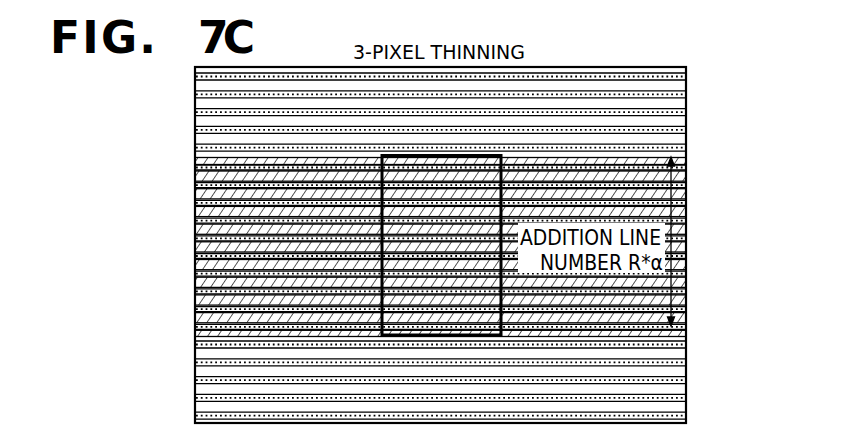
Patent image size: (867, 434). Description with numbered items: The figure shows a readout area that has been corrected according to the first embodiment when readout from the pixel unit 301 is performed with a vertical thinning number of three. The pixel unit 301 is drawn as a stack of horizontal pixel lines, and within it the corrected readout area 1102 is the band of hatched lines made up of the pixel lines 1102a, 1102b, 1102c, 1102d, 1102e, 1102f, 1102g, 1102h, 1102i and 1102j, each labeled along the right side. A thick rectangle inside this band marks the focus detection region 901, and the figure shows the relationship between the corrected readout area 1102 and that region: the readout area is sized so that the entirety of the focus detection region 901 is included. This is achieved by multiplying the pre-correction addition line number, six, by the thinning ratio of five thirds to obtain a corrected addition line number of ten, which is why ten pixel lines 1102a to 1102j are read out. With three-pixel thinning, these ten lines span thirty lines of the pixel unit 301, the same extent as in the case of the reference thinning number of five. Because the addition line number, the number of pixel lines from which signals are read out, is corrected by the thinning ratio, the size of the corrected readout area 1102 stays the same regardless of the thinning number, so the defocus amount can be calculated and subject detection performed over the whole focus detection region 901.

The pixel unit 301 is at (678, 60).
The focus detection region 901 is at (474, 148).
The corrected readout area 1102 is at (455, 250).
The pixel line 1102a is at (685, 162).
The pixel line 1102b is at (685, 180).
The pixel line 1102c is at (685, 197).
The pixel line 1102d is at (685, 198).
The pixel line 1102e is at (685, 216).
The pixel line 1102f is at (685, 234).
The pixel line 1102g is at (685, 252).
The pixel line 1102h is at (685, 269).
The pixel line 1102i is at (685, 287).
The pixel line 1102j is at (685, 305).